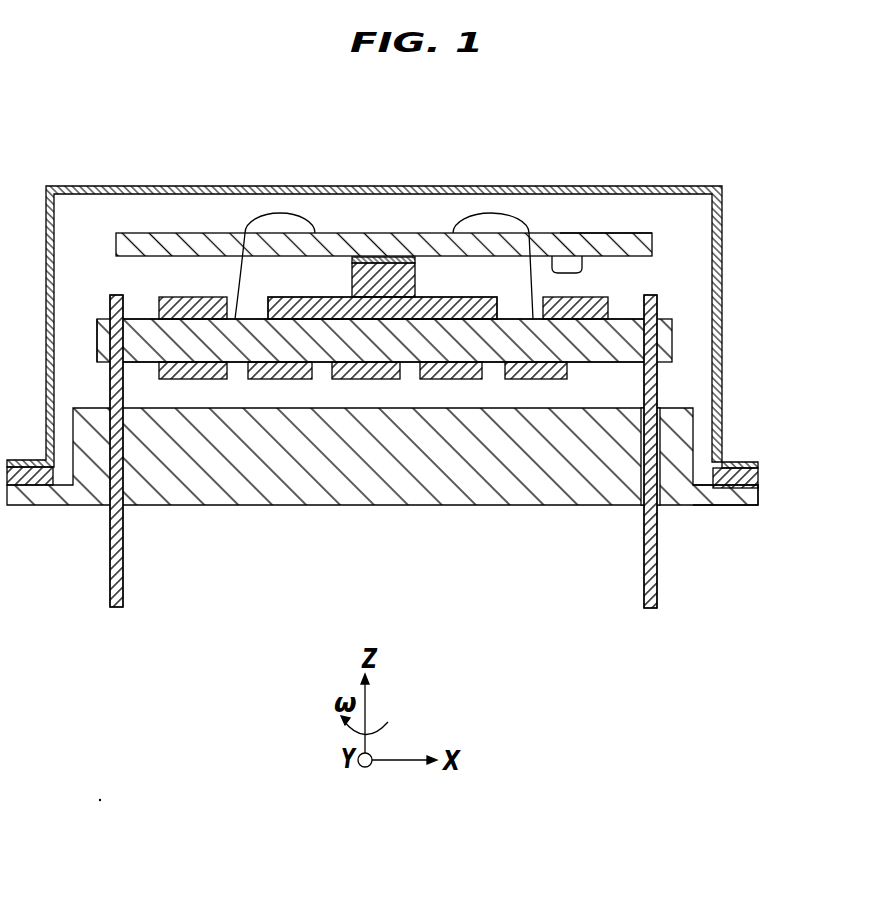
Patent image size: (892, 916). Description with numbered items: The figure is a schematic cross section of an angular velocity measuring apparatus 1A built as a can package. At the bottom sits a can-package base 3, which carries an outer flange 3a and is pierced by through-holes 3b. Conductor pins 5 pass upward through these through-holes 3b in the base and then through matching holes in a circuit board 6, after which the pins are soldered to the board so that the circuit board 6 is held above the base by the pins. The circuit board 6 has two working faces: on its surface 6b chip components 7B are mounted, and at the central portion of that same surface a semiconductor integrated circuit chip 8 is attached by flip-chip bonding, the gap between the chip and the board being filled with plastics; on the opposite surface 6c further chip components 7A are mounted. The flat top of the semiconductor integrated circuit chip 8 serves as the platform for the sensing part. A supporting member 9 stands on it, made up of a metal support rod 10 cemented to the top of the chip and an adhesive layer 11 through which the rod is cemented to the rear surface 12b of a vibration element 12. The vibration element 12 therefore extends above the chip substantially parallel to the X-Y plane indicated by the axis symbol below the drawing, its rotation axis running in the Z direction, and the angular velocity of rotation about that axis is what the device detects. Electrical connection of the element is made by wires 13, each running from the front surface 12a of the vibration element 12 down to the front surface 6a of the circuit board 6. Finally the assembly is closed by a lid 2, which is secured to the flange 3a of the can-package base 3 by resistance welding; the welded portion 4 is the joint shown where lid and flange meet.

The angular velocity apparatus 1A is at (736, 210).
The lid 2 is at (658, 186).
The can-package base 3 is at (698, 408).
The flange 3a is at (737, 507).
The through-holes 3b is at (640, 502).
The welded portion 4 is at (756, 478).
The conductor pins 5 is at (110, 560).
The circuit board 6 is at (678, 329).
The through-holes / front surface of circuit board 6a is at (634, 319).
The surface of circuit board 6b is at (140, 318).
The surface of circuit board 6c is at (143, 363).
The chip components 7A is at (200, 380).
The chip components 7B is at (198, 306).
The semiconductor integrated circuit chip 8 is at (481, 299).
The supporting member 9 is at (416, 256).
The support rod 10 is at (454, 230).
The adhesive layer 11 is at (352, 257).
The vibration element 12 is at (369, 226).
The front surface of vibration element 12a is at (605, 233).
The rear surface of vibration element 12b is at (562, 256).
The wires 13 is at (277, 214).